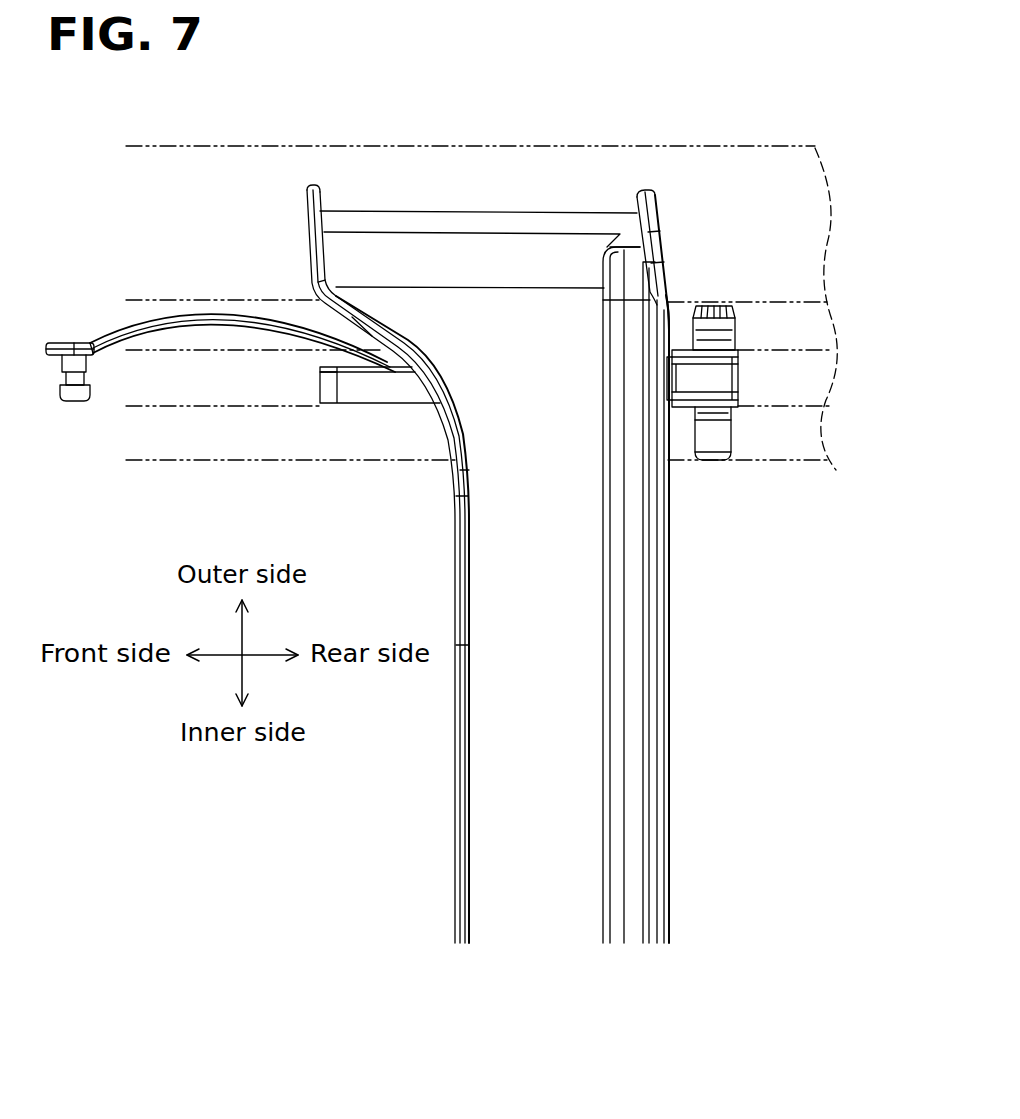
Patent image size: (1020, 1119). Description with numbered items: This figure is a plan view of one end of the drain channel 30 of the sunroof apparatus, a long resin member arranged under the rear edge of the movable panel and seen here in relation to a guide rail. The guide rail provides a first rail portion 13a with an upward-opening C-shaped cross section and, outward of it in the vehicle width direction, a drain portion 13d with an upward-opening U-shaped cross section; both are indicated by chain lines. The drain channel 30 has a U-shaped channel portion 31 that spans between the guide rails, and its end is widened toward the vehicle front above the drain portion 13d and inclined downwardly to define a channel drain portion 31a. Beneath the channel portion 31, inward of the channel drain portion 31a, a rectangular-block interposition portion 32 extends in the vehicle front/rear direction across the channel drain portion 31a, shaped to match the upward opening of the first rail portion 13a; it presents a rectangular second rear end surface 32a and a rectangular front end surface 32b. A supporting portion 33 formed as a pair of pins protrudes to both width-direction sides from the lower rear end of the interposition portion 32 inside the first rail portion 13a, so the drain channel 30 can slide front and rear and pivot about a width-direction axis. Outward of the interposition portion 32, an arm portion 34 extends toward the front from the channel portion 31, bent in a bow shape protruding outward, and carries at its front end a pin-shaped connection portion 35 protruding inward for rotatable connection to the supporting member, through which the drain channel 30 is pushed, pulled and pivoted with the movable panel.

The first rail portion 13a is at (333, 460).
The drain portion 13d is at (416, 146).
The drain channel 30 is at (455, 718).
The channel portion 31 is at (650, 556).
The channel drain portion 31a is at (660, 224).
The interposition portion 32 is at (367, 386).
The second rear end surface 32a is at (740, 378).
The front end surface 32b is at (320, 386).
The supporting portion 33 is at (704, 306).
The arm portion 34 is at (113, 336).
The connection portion 35 is at (76, 402).